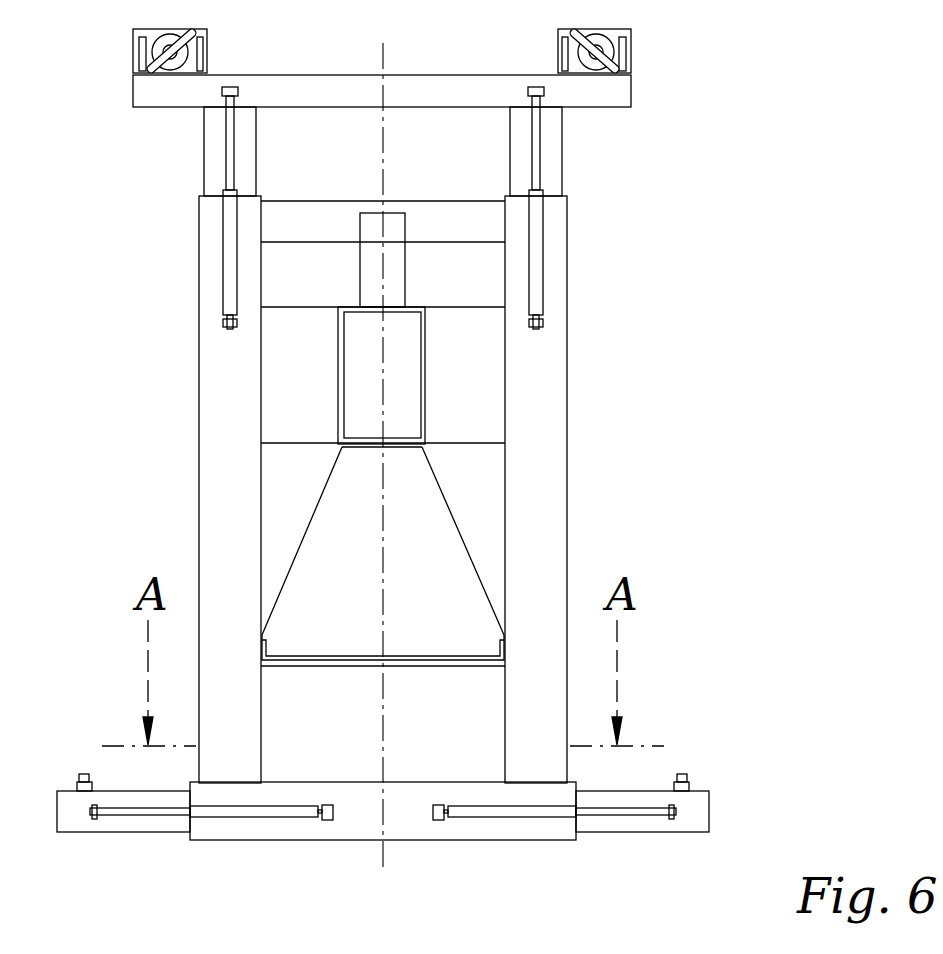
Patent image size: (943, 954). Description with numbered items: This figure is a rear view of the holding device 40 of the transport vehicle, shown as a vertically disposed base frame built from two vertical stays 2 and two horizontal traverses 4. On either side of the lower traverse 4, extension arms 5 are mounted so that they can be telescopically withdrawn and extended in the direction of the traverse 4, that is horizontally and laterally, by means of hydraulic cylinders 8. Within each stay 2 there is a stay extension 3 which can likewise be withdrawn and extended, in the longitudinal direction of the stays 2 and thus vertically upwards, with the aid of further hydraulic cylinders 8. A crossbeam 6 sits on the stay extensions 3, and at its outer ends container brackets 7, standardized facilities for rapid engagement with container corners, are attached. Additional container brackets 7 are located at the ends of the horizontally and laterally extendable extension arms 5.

The vertical stay 2 is at (241, 459).
The stay extension 3 is at (217, 155).
The horizontal traverse 4 is at (319, 233).
The extension arm 5 is at (77, 822).
The crossbeam 6 is at (421, 94).
The container bracket 7 is at (140, 41).
The hydraulic cylinder 8 is at (230, 262).
The holding device 40 is at (758, 165).